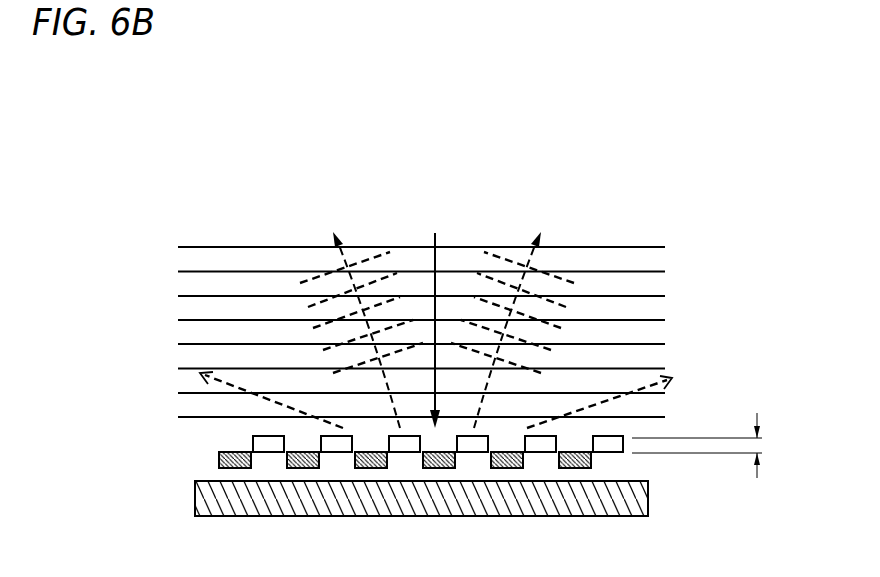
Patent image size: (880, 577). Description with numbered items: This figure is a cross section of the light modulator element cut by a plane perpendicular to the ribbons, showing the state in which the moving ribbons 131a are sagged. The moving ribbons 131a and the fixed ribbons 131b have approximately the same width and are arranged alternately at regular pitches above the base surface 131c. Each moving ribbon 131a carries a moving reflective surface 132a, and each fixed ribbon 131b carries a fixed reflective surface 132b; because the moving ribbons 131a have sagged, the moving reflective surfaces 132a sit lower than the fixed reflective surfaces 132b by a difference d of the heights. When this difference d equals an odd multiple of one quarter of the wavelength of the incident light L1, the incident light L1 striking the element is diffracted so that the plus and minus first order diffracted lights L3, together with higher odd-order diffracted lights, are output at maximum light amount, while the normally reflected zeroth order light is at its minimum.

The moving ribbon 131a is at (218, 458).
The fixed ribbon 131b is at (252, 442).
The base surface 131c is at (240, 481).
The moving reflective surface 132a is at (574, 451).
The fixed reflective surface 132b is at (600, 437).
The incident light L1 is at (434, 264).
The first order diffracted light L3 is at (346, 250).
The difference of heights d is at (707, 445).